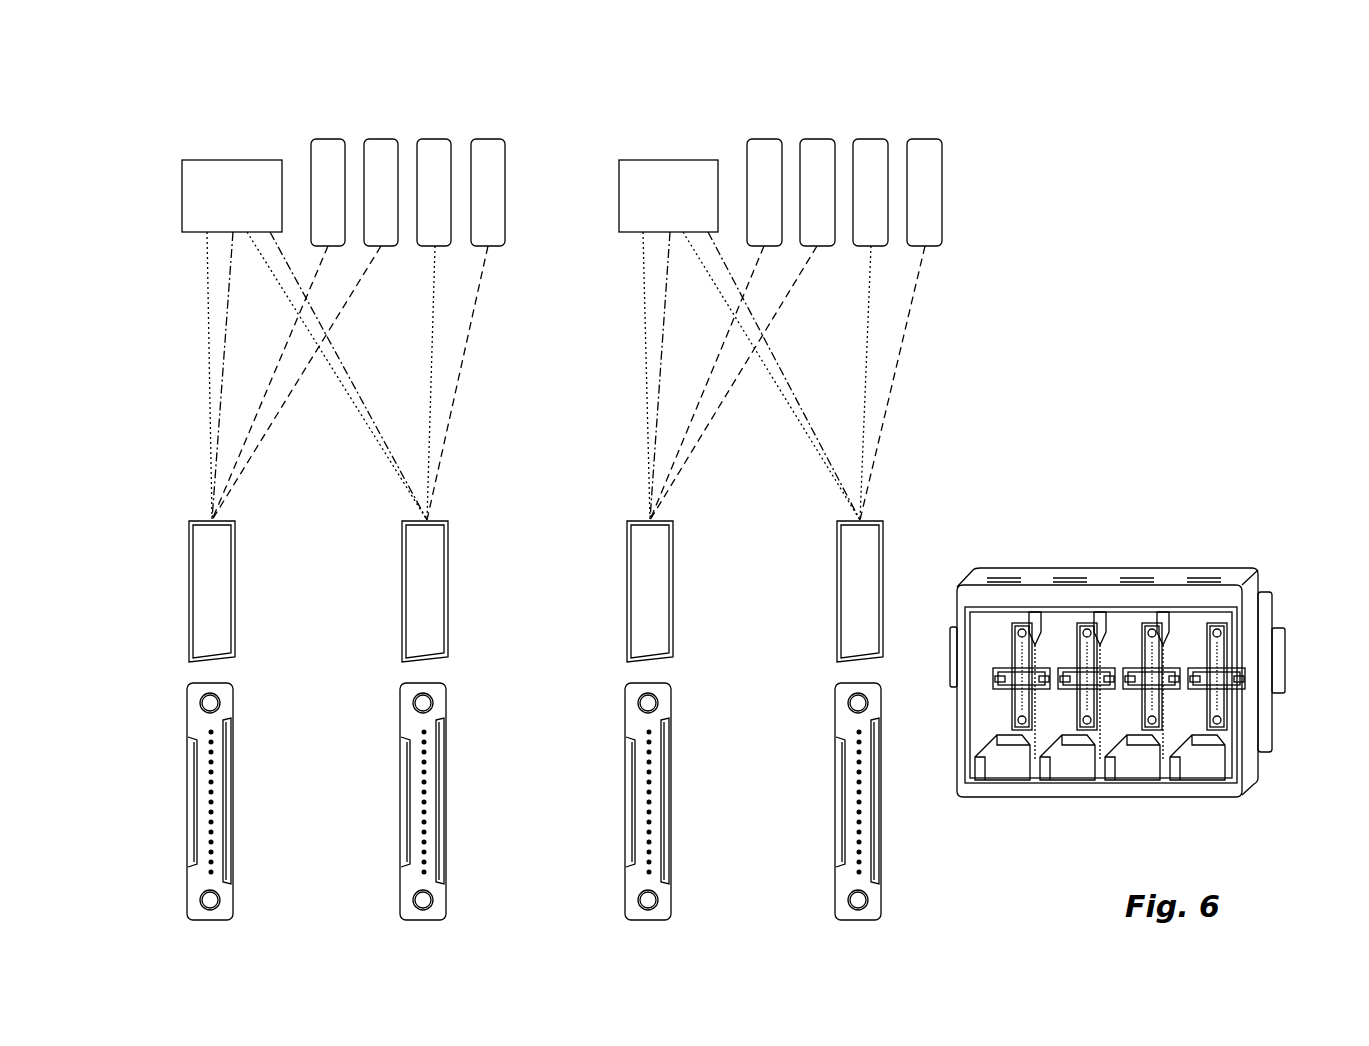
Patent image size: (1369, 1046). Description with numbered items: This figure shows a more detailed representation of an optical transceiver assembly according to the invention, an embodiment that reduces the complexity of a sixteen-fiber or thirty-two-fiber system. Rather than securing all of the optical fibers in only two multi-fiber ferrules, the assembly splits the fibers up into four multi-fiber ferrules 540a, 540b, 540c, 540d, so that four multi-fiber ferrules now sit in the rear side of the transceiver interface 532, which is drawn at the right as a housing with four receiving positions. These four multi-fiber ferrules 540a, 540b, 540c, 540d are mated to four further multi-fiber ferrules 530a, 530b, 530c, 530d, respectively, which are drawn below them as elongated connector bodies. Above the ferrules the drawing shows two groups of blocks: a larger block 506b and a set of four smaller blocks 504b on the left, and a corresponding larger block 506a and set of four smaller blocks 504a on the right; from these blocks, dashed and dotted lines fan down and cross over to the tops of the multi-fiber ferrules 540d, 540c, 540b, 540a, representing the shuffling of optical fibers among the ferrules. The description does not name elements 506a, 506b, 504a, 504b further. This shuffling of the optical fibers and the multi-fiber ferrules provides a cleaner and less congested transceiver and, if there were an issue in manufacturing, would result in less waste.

The power connector block 506b is at (235, 160).
The signal connector blocks 504b is at (513, 137).
The power connector block 506a is at (672, 160).
The signal connector blocks 504a is at (947, 137).
The multi-fiber ferrule 540d is at (235, 586).
The multi-fiber ferrule 540c is at (448, 586).
The multi-fiber ferrule 540b is at (673, 586).
The multi-fiber ferrule 540a is at (883, 539).
The multi-fiber ferrule 530d is at (233, 905).
The multi-fiber ferrule 530c is at (446, 905).
The multi-fiber ferrule 530b is at (671, 905).
The multi-fiber ferrule 530a is at (881, 905).
The transceiver interface 532 is at (1113, 568).